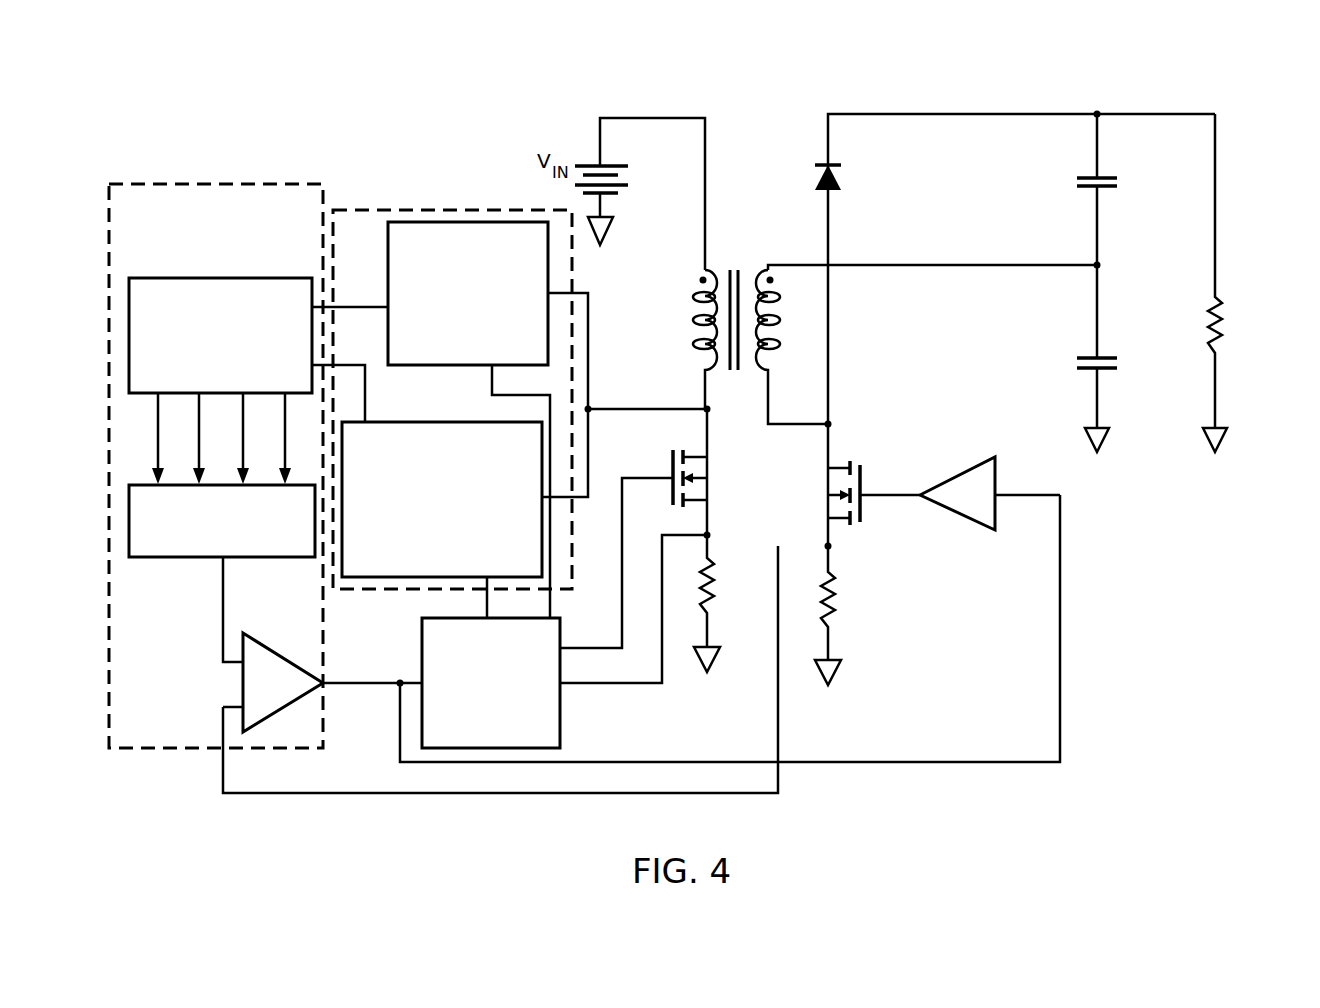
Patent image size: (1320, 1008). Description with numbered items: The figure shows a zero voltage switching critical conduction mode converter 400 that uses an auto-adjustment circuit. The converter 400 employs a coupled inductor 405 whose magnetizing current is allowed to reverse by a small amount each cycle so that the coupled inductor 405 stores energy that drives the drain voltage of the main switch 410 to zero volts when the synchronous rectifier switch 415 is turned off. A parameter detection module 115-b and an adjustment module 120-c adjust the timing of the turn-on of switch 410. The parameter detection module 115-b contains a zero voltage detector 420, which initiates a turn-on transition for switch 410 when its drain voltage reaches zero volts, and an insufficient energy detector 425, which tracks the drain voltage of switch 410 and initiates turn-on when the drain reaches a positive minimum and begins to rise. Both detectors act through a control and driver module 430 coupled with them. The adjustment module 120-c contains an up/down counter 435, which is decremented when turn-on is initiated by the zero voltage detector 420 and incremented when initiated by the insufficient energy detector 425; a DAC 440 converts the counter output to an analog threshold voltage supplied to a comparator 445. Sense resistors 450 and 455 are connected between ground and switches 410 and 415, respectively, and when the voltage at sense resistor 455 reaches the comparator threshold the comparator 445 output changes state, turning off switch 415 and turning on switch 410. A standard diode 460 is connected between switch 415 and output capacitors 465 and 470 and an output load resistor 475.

The zero voltage switching critical conduction mode converter 400 is at (1024, 814).
The adjustment module 120-c is at (188, 183).
The parameter detection module 115-b is at (383, 210).
The coupled inductor 405 is at (768, 266).
The main switch 410 is at (710, 502).
The synchronous rectifier switch 415 is at (830, 495).
The zero voltage detector 420 is at (386, 290).
The insufficient energy detector 425 is at (395, 422).
The control and driver module 430 is at (422, 652).
The up/down counter 435 is at (215, 278).
The DAC 440 is at (208, 559).
The comparator 445 is at (250, 634).
The sense resistor 450 is at (712, 578).
The sense resistor 455 is at (833, 588).
The standard diode 460 is at (840, 180).
The output capacitor 465 is at (1110, 176).
The output capacitor 470 is at (1110, 357).
The output load resistor 475 is at (1218, 316).